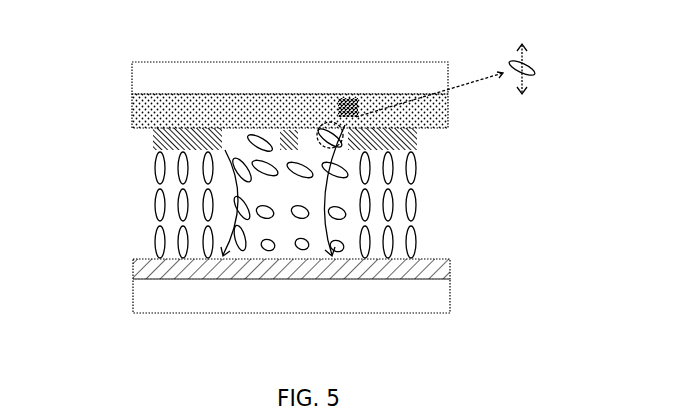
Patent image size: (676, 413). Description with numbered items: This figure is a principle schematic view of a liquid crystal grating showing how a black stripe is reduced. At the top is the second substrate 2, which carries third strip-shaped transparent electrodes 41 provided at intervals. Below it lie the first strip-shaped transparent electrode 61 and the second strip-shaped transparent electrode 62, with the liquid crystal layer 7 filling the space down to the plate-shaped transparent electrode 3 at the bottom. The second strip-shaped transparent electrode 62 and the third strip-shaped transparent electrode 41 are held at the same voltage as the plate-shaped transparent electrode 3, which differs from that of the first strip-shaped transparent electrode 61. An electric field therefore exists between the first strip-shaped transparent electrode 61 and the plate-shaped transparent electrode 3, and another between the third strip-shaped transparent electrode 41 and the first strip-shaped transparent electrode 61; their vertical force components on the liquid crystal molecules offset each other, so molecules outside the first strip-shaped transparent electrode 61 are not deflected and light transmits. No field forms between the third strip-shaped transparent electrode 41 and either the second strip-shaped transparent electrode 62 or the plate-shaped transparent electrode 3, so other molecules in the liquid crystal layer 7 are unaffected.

The second substrate 2 is at (132, 83).
The plate-shaped transparent electrode 3 is at (450, 268).
The liquid crystal layer 7 is at (153, 195).
The third strip-shaped transparent electrode 41 is at (355, 97).
The first strip-shaped transparent electrode 61 is at (417, 137).
The second strip-shaped transparent electrode 62 is at (296, 128).